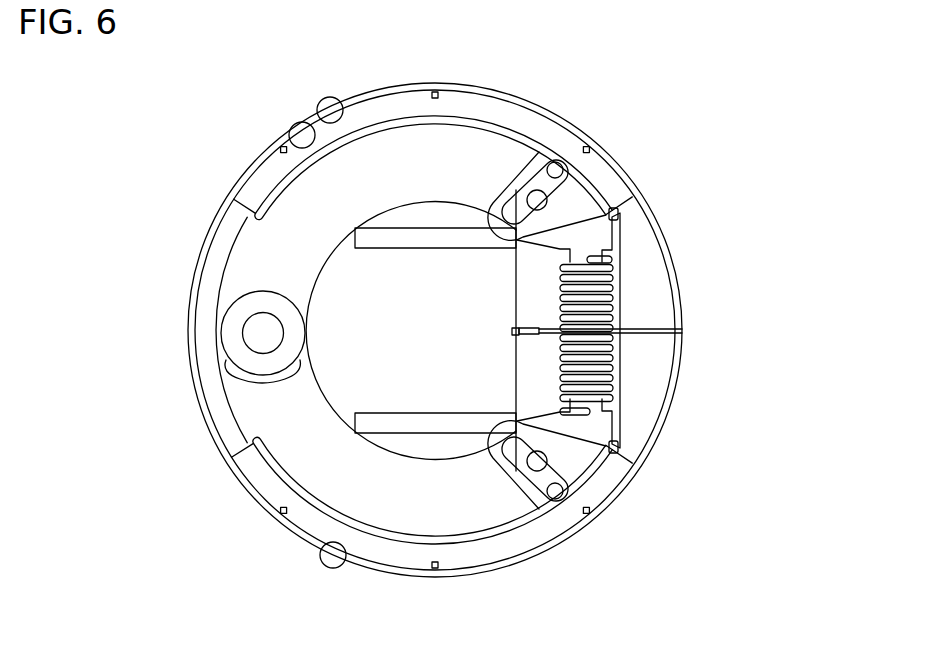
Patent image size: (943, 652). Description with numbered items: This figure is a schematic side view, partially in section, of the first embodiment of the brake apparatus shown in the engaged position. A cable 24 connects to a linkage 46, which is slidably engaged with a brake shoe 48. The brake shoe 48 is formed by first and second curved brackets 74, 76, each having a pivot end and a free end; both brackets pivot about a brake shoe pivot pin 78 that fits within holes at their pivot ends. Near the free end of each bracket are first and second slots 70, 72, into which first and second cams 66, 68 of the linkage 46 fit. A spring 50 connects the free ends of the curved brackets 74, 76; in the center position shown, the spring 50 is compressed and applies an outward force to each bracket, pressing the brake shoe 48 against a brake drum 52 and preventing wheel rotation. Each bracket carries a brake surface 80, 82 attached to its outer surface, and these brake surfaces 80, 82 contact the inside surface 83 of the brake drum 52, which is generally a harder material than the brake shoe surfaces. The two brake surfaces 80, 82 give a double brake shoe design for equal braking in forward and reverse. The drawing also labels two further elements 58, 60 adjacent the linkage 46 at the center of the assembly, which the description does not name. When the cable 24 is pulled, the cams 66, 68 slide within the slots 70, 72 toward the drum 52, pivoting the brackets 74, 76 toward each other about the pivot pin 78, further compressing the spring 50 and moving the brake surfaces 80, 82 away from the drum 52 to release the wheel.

The cable 24 is at (653, 331).
The linkage 46 is at (513, 279).
The brake shoe 48 is at (216, 300).
The spring 50 is at (610, 383).
The brake drum 52 is at (587, 137).
The lower piston 58 is at (405, 412).
The upper piston 60 is at (382, 248).
The first cam 66 is at (540, 468).
The second cam 68 is at (545, 193).
The first slot 70 is at (570, 477).
The second slot 72 is at (543, 163).
The first curved bracket 74 is at (470, 533).
The second curved bracket 76 is at (486, 132).
The brake shoe pivot pin 78 is at (247, 342).
The first brake surface 80 is at (343, 562).
The second brake surface 82 is at (340, 103).
The inside surface of the brake drum 83 is at (290, 132).